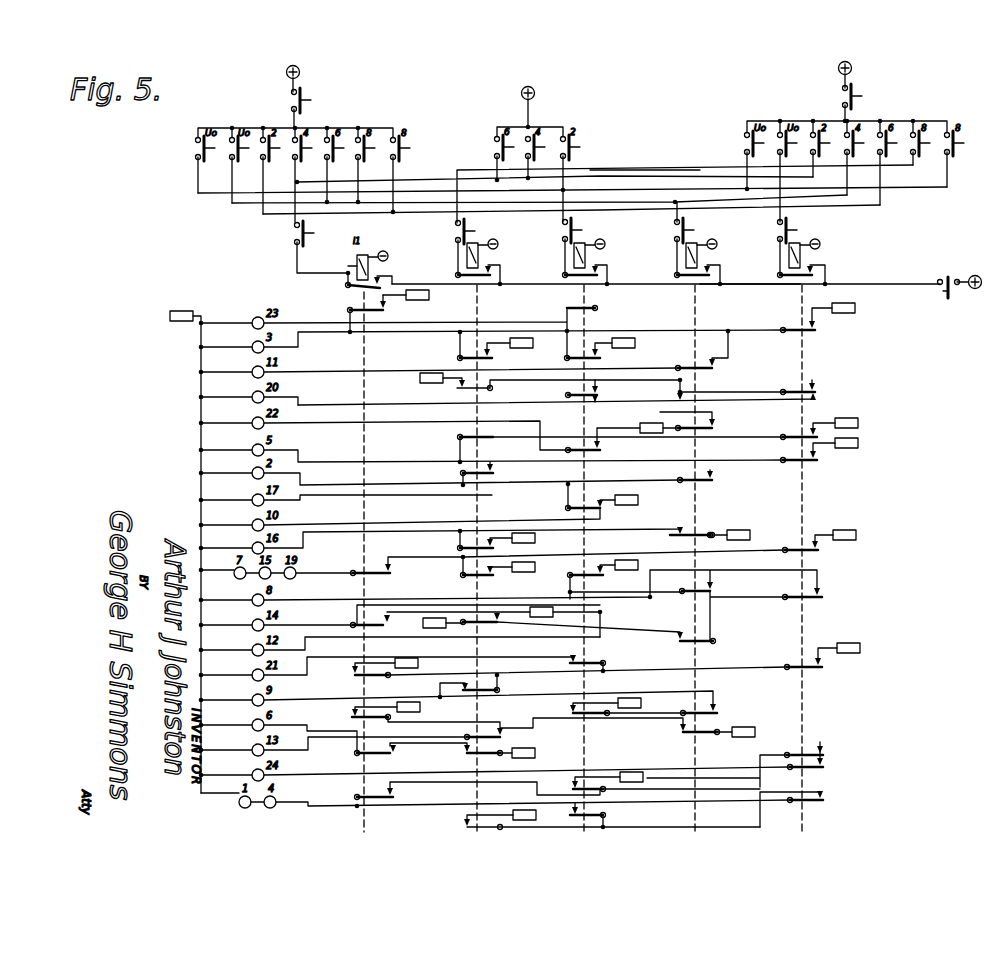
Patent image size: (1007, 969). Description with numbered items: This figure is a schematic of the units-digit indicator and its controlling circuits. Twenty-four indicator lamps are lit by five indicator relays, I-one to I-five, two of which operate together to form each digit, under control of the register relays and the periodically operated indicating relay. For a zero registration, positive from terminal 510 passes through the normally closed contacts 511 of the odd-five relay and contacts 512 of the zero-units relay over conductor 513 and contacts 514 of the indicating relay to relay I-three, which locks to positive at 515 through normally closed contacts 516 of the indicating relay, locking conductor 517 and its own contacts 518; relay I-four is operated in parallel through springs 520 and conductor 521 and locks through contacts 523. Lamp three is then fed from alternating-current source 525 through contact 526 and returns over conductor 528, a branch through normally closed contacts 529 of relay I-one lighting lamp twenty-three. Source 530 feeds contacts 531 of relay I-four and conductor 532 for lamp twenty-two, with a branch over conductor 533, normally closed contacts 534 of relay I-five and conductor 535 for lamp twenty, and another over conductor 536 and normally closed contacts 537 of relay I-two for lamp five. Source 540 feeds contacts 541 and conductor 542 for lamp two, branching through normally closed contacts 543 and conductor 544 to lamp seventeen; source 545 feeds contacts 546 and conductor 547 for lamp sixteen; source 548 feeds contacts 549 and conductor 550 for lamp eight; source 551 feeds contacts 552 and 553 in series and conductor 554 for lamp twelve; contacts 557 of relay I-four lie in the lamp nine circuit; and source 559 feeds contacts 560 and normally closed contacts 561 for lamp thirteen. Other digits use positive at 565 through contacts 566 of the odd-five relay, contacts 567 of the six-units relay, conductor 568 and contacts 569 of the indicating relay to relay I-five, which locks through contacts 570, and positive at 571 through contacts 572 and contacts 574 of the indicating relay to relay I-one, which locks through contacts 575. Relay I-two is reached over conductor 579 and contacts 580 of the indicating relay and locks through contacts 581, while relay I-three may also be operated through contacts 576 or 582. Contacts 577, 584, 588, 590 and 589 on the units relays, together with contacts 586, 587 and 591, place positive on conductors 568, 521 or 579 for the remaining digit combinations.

The positive terminal 510 is at (300, 72).
The normally closed contacts 511 is at (290, 98).
The contacts 512 is at (208, 164).
The springs 520 is at (238, 169).
The contacts 577 is at (271, 175).
The contacts 584 is at (302, 179).
The contacts 588 is at (334, 169).
The contacts 590 is at (366, 169).
The contacts 589 is at (825, 168).
The conductor 579 is at (670, 166).
The positive terminal 571 is at (530, 86).
The contacts 572 is at (494, 146).
The contacts 580 is at (553, 134).
The contacts 576 is at (582, 146).
The positive terminal 565 is at (838, 68).
The contacts 566 is at (840, 96).
The contacts 586 is at (744, 140).
The contacts 587 is at (780, 126).
The contacts 591 is at (855, 156).
The contacts 567 is at (890, 156).
The conductor 568 is at (922, 160).
The contacts 582 is at (958, 153).
The contacts 574 is at (288, 238).
The contacts 581 is at (385, 273).
The contacts 575 is at (345, 287).
The normally closed contacts 529 is at (345, 308).
The conductor 517 is at (752, 285).
The conductor 513 is at (508, 196).
The conductor 521 is at (501, 256).
The contacts 518 is at (498, 273).
The contacts 514 is at (548, 204).
The conductor 532 is at (386, 430).
The contacts 523 is at (608, 273).
The contacts 569 is at (776, 226).
The contacts 570 is at (778, 274).
The normally closed contacts 516 is at (942, 291).
The positive terminal 515 is at (976, 273).
The conductor 528 is at (201, 347).
The contact 526 is at (565, 322).
The source of alternating current 525 is at (622, 337).
The conductor 533 is at (768, 376).
The normally closed contacts 534 is at (814, 384).
The normally closed contacts 537 is at (458, 432).
The conductor 536 is at (565, 404).
The conductor 535 is at (665, 410).
The source of alternating current 530 is at (638, 430).
The contacts 531 is at (712, 424).
The conductor 542 is at (496, 478).
The normally closed contacts 543 is at (458, 480).
The conductor 544 is at (398, 486).
The contacts 541 is at (566, 508).
The source of alternating current 540 is at (638, 500).
The conductor 547 is at (602, 530).
The source of alternating current 545 is at (752, 530).
The contacts 546 is at (714, 532).
The conductor 550 is at (444, 594).
The contacts 549 is at (566, 582).
The source of alternating current 548 is at (638, 566).
The contacts 552 is at (600, 622).
The contacts 553 is at (718, 640).
The conductor 554 is at (460, 640).
The source of alternating current 551 is at (572, 656).
The normally closed contacts 561 is at (502, 727).
The contacts 557 is at (718, 714).
The contacts 560 is at (686, 736).
The source of alternating current 559 is at (755, 730).